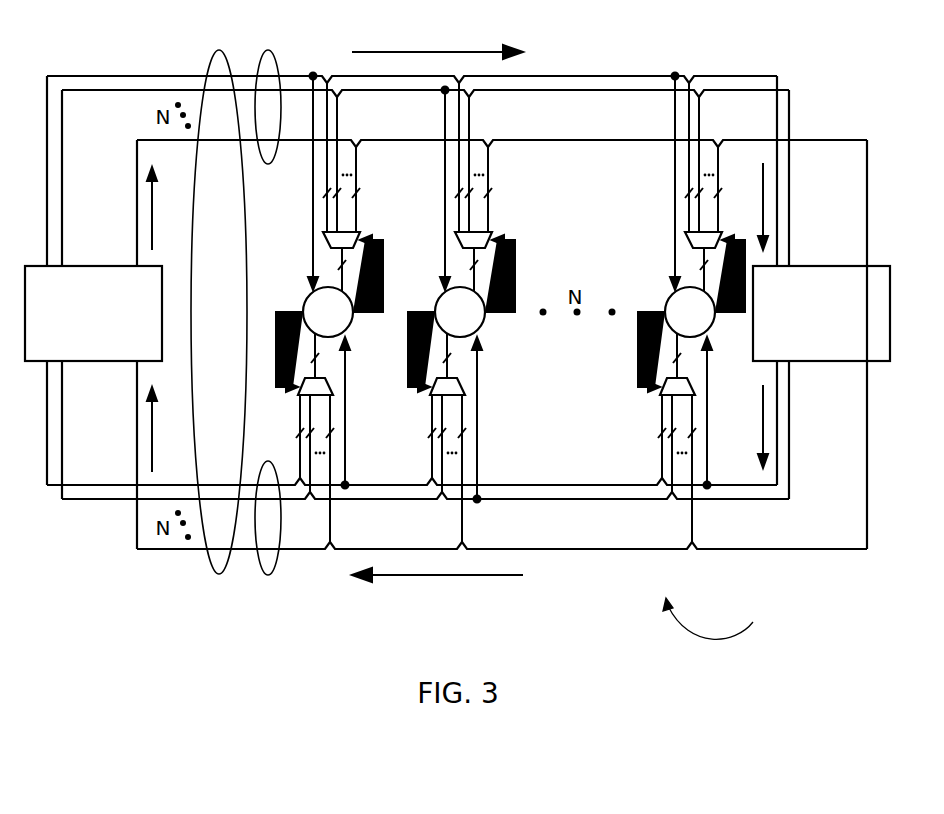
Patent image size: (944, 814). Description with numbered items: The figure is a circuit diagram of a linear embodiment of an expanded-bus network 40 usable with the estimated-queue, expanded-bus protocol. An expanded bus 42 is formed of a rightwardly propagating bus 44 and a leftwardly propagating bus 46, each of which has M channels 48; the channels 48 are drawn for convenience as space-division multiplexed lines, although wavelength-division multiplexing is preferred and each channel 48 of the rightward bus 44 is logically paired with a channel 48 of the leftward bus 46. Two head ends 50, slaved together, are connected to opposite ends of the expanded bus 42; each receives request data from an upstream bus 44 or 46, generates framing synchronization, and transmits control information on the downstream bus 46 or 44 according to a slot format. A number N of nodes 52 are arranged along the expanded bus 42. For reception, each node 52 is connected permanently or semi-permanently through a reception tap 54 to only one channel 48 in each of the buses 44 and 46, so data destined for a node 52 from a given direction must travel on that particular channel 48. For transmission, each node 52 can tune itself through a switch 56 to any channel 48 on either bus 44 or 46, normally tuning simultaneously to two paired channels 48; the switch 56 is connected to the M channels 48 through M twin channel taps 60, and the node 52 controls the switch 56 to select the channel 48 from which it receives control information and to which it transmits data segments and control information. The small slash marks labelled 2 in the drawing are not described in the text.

The two-bit link 2 is at (509, 312).
The expanded-bus network 40 is at (742, 621).
The expanded bus 42 is at (207, 68).
The rightwardly propagating bus 44 is at (262, 65).
The leftwardly propagating bus 46 is at (258, 565).
The channel 48 is at (290, 75).
The head end 50 is at (85, 363).
The node 52 is at (509, 312).
The reception tap 54 is at (443, 167).
The switch 56 is at (493, 232).
The twin channel tap 60 is at (492, 210).